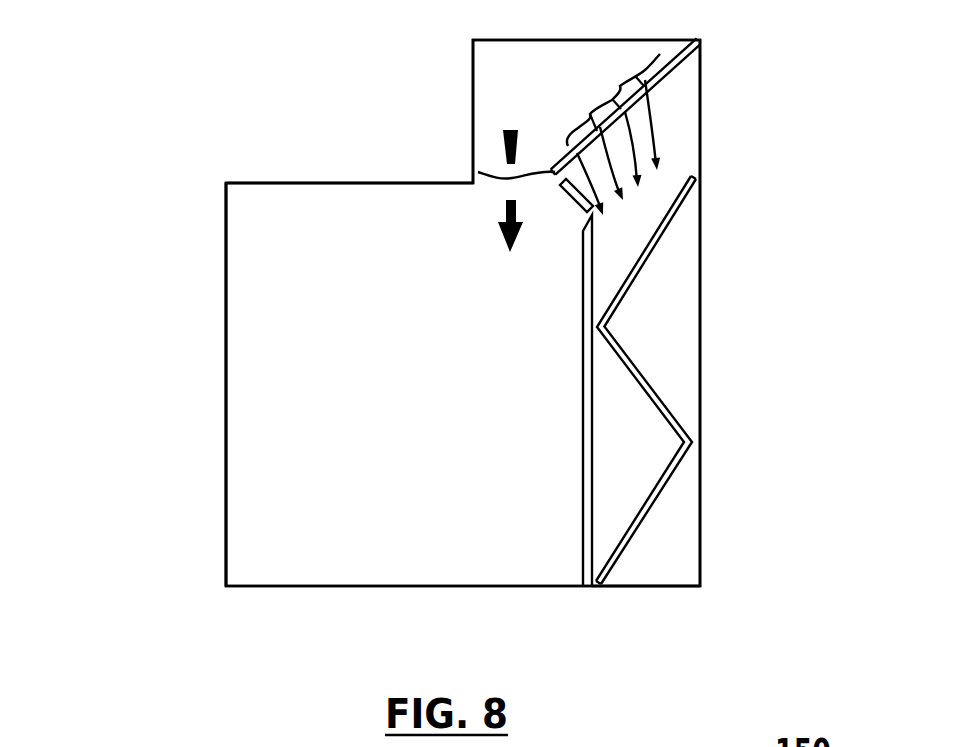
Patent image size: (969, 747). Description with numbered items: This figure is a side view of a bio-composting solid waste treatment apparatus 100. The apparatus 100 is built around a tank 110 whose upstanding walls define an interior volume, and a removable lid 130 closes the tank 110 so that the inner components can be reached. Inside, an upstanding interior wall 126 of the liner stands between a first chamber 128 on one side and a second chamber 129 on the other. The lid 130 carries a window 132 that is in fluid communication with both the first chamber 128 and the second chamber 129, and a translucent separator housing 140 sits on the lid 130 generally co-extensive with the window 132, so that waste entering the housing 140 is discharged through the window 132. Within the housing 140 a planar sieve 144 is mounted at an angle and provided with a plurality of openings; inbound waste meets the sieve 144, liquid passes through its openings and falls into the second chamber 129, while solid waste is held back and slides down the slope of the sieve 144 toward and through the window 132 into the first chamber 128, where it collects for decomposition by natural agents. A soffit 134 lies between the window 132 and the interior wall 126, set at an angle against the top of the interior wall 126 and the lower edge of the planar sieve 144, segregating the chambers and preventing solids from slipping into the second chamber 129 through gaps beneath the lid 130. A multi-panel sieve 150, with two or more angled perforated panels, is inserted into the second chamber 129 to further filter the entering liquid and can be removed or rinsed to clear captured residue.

The solid waste treatment apparatus 100 is at (133, 90).
The tank 110 is at (226, 295).
The interior wall 126 is at (572, 524).
The first chamber 128 is at (268, 481).
The second chamber 129 is at (659, 534).
The lid 130 is at (284, 183).
The window 132 is at (505, 185).
The soffit 134 is at (565, 222).
The separator housing 140 is at (700, 104).
The planar sieve 144 is at (698, 42).
The multi-panel sieve 150 is at (644, 350).